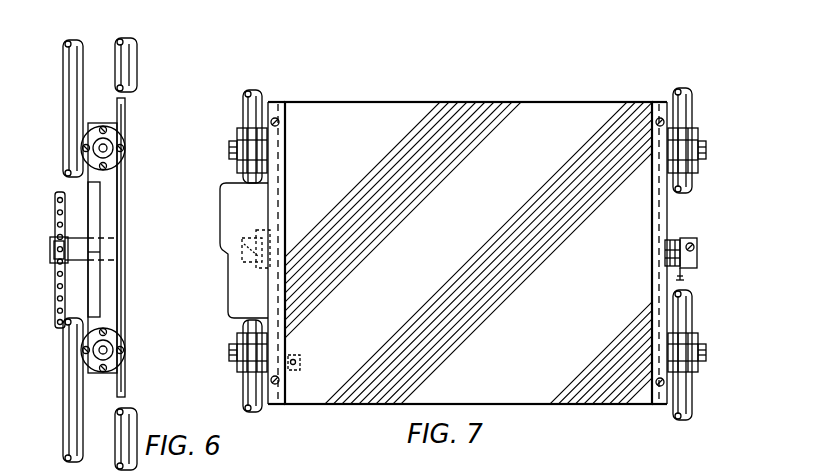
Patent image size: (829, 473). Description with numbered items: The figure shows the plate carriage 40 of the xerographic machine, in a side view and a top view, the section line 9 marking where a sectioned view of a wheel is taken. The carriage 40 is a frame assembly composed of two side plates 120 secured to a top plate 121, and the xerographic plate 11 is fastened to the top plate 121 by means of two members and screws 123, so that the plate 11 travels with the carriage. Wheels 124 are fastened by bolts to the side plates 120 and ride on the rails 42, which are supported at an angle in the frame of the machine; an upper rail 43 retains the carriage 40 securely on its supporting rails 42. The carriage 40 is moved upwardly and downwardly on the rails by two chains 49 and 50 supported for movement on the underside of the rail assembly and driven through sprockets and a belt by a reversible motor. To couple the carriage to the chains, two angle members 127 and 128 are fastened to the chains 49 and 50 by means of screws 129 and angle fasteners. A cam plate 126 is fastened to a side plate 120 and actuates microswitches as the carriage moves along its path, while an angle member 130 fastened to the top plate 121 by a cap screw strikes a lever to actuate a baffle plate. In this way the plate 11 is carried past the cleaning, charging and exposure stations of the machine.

In FIG. 7, the section line 9- 9 is at (230, 350).
In FIG. 6, the xerographic plate 11 is at (126, 245).
In FIG. 7, the xerographic plate 11 is at (484, 223).
In FIG. 6, the plate carriage 40 is at (158, 80).
In FIG. 7, the plate carriage 40 is at (686, 213).
In FIG. 6, the rail 42 is at (65, 409).
In FIG. 7, the rail 42 is at (243, 406).
In FIG. 6, the upper rail 43 is at (127, 427).
In FIG. 7, the chain 49 is at (683, 280).
In FIG. 6, the chain 50 is at (58, 192).
In FIG. 7, the chain 50 is at (262, 229).
In FIG. 6, the side plate 120 is at (112, 318).
In FIG. 6, the top plate 121 is at (118, 110).
In FIG. 7, the screw 123 is at (274, 118).
In FIG. 7, the wheel 124 is at (240, 367).
In FIG. 6, the cam plate 126 is at (93, 210).
In FIG. 7, the cam plate 126 is at (228, 276).
In FIG. 6, the angle member 127 is at (72, 249).
In FIG. 7, the angle member 128 is at (697, 266).
In FIG. 7, the screw 129 is at (697, 246).
In FIG. 7, the angle member 130 is at (303, 361).